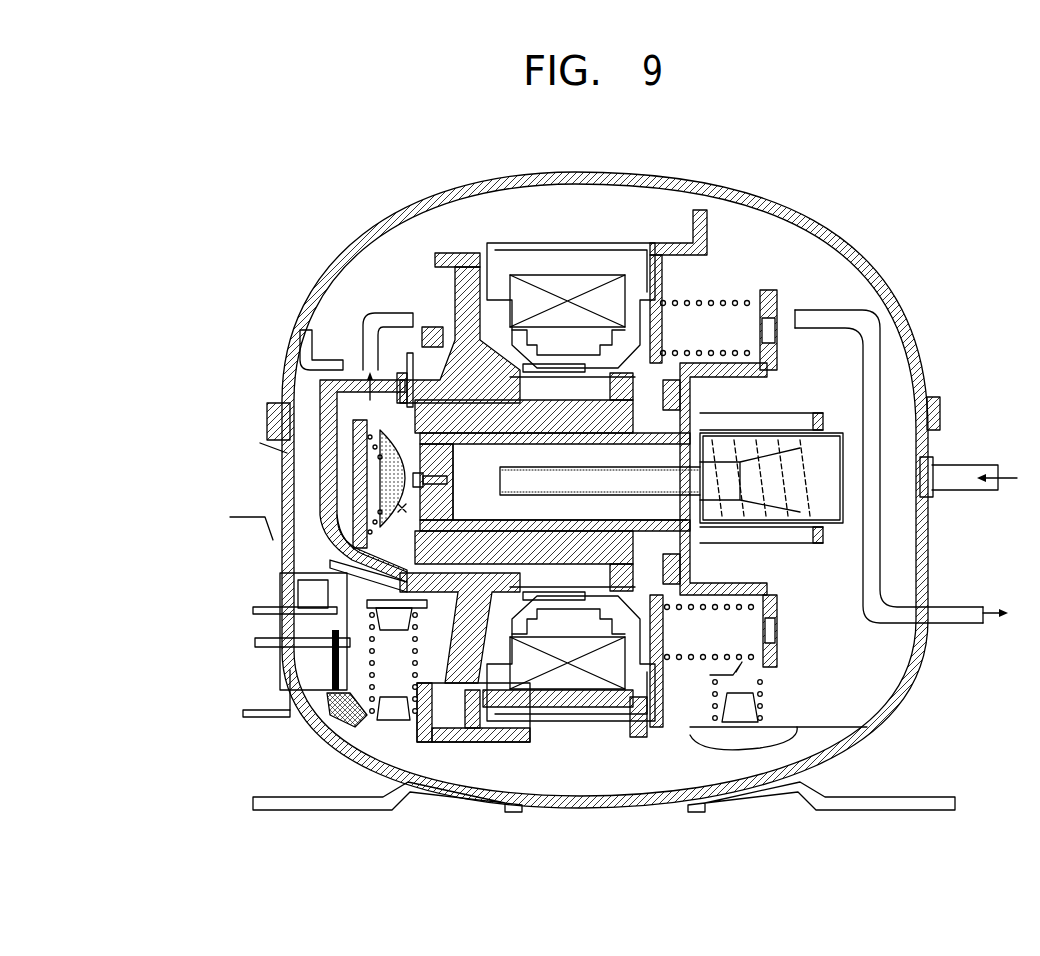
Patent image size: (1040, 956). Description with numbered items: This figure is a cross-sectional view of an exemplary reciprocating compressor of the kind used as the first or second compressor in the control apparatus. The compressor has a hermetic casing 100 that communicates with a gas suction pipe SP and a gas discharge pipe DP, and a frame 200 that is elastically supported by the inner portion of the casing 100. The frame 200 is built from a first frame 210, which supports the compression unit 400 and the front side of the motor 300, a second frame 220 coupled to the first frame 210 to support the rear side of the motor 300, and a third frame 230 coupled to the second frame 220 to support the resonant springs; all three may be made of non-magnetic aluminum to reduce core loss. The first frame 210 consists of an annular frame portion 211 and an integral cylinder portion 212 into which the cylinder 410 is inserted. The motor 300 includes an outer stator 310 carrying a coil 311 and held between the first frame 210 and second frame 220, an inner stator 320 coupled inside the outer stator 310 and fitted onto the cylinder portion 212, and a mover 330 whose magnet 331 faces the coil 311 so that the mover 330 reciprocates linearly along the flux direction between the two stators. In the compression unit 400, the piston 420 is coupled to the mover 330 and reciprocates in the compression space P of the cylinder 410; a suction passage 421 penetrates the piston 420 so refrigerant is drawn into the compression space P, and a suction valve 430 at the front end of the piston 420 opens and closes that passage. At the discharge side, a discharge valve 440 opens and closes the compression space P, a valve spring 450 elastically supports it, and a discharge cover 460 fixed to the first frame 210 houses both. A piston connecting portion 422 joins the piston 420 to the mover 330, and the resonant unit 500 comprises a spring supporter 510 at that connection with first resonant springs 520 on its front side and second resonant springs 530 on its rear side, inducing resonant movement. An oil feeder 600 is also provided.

The casing 100 is at (877, 267).
The frame 200 is at (368, 298).
The first frame 210 is at (428, 403).
The frame portion 211 is at (543, 410).
The cylinder portion 212 is at (460, 257).
The second frame 220 is at (702, 212).
The third frame 230 is at (823, 417).
The motor 300 is at (653, 137).
The outer stator 310 is at (547, 300).
The coil 311 is at (523, 258).
The inner stator 320 is at (600, 390).
The mover 330 is at (625, 372).
The magnet 331 is at (577, 385).
The compression unit 400 is at (177, 333).
The cylinder 410 is at (405, 385).
The piston 420 is at (425, 410).
The suction passage 421 is at (489, 493).
The piston connecting portion 422 is at (645, 590).
The suction valve 430 is at (420, 453).
The discharge valve 440 is at (387, 467).
The valve spring 450 is at (377, 510).
The discharge cover 460 is at (353, 520).
The resonant unit 500 is at (833, 137).
The spring supporter 510 is at (770, 290).
The first resonant springs 520 is at (733, 300).
The second resonant springs 530 is at (800, 432).
The oil feeder 600 is at (549, 750).
The compression space P is at (407, 553).
The gas suction pipe SP is at (967, 483).
The gas discharge pipe DP is at (967, 623).